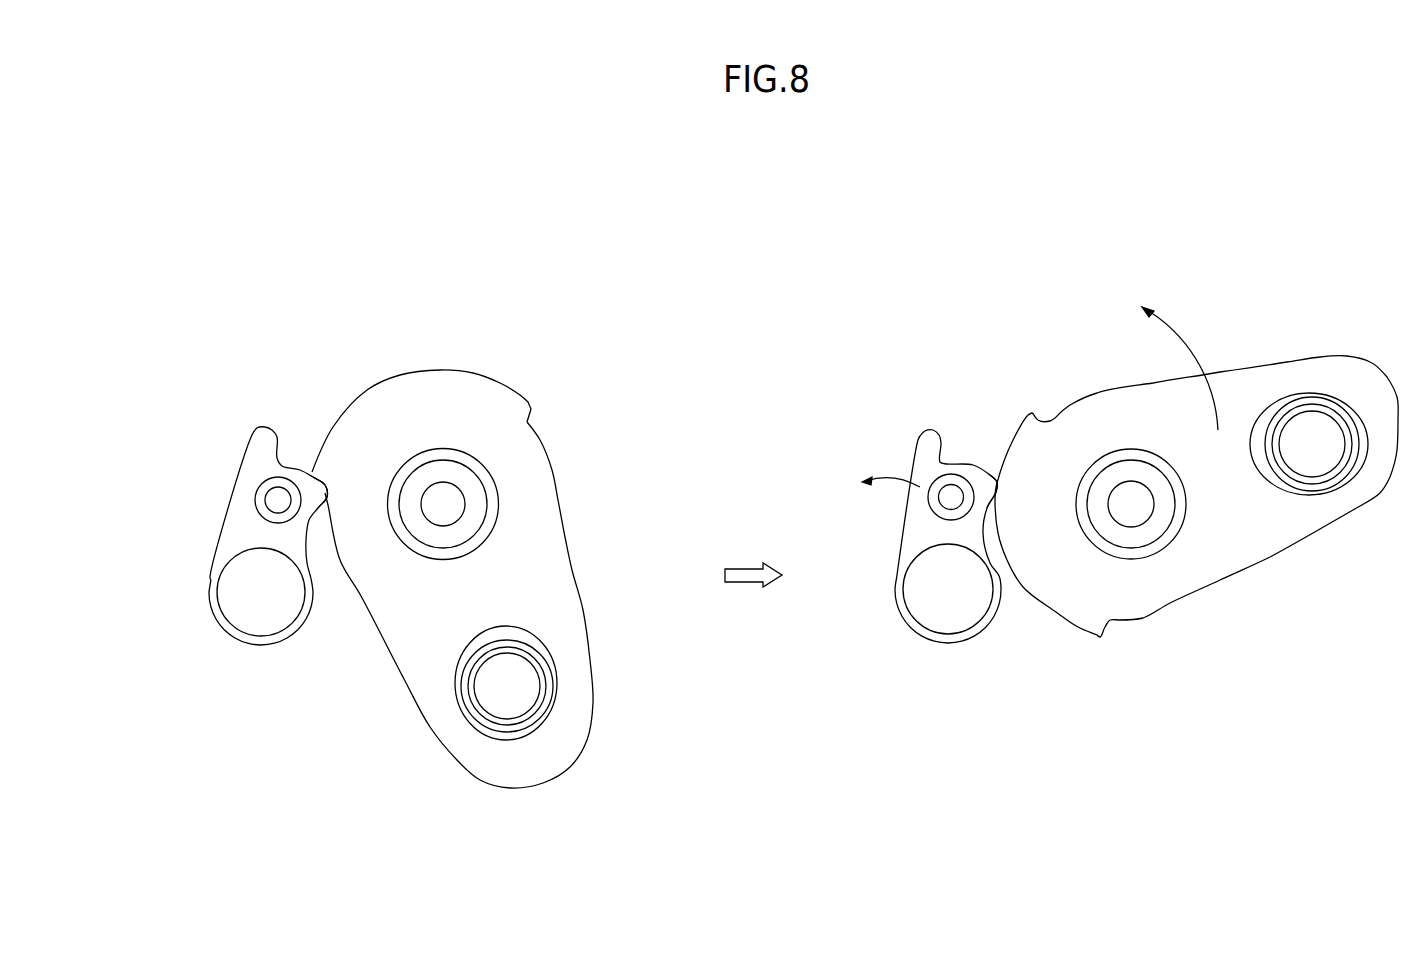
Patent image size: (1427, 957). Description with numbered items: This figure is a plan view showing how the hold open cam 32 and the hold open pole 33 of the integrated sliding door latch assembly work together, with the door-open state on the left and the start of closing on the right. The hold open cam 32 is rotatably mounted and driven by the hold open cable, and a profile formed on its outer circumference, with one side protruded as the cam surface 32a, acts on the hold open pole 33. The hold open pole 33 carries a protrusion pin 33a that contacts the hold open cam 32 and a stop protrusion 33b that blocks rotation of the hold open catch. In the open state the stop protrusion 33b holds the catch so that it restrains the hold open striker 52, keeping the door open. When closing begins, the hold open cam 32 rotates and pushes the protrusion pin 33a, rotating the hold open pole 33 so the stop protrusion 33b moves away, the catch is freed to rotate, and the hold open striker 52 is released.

The hold open cam 32 is at (550, 573).
The cam surface 32a is at (458, 400).
The hold open pole 33 is at (247, 533).
The protrusion pin 33a is at (275, 498).
The stop protrusion 33b is at (320, 488).
The hold open striker 52 is at (517, 695).